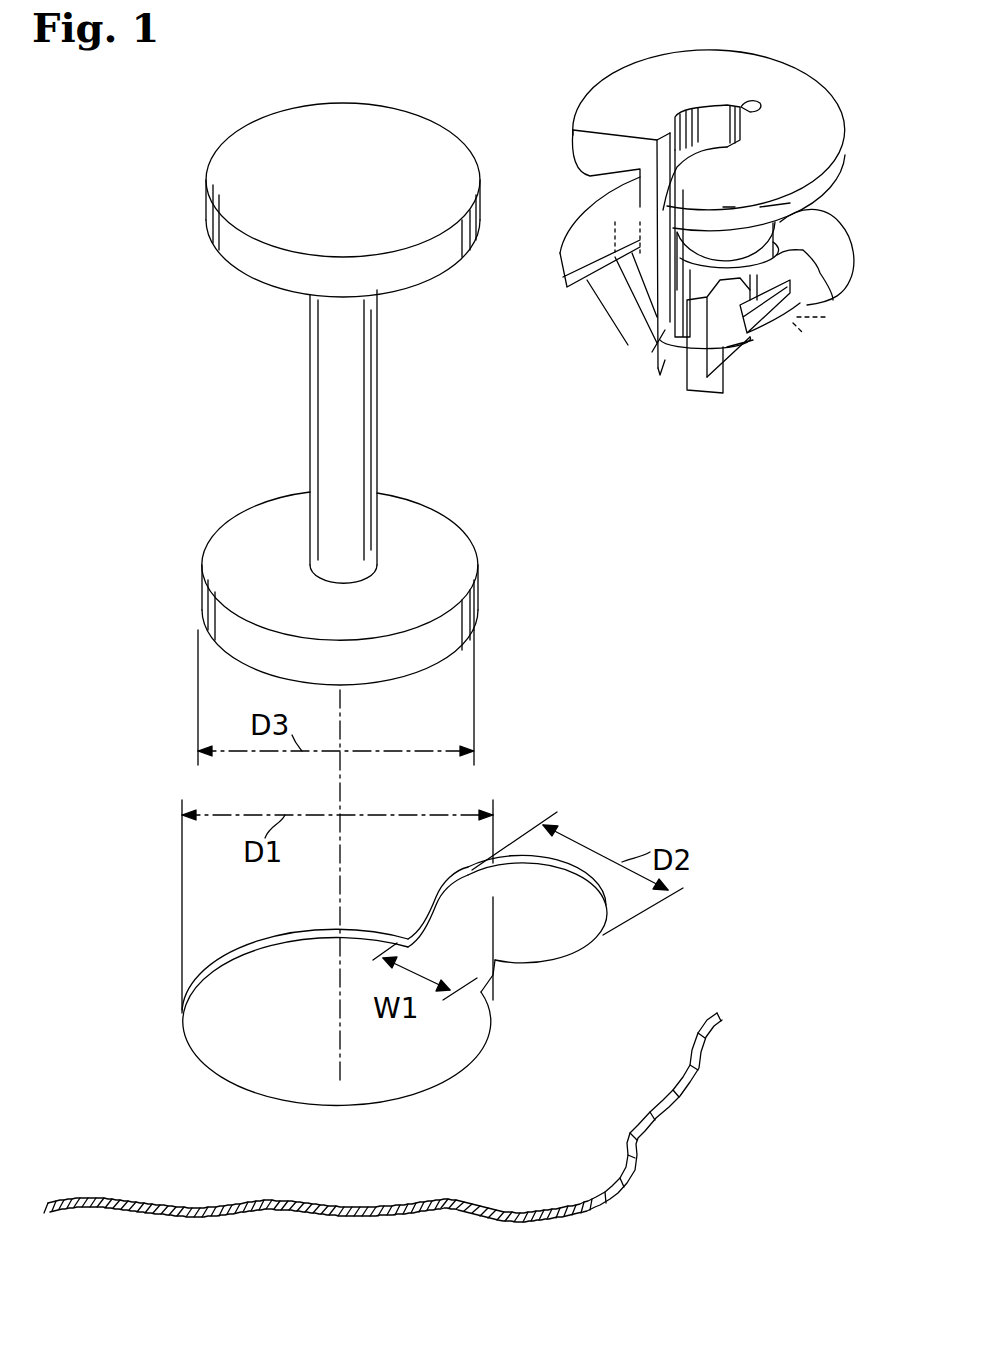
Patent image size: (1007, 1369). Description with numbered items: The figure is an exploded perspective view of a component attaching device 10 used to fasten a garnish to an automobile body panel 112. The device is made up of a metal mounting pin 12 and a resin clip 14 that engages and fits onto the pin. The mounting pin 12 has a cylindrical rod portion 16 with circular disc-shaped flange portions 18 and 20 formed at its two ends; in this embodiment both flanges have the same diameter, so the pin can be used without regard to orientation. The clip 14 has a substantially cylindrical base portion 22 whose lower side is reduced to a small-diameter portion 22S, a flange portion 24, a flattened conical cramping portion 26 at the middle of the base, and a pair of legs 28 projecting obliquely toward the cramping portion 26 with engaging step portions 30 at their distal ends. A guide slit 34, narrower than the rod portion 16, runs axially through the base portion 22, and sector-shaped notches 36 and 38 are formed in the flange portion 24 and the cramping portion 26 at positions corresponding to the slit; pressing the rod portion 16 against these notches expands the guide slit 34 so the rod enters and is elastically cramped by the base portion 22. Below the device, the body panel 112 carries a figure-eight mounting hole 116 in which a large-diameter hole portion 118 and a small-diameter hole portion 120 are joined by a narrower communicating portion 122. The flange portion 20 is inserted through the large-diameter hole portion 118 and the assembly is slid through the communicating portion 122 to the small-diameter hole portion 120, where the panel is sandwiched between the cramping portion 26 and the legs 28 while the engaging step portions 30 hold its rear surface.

The component attaching device 10 is at (787, 505).
The mounting pin 12 is at (483, 560).
The clip 14 is at (737, 395).
The rod portion 16 is at (308, 396).
The flange portion 18 is at (205, 178).
The flange portion 20 is at (203, 553).
The base portion 22 is at (637, 180).
The small-diameter portion 22S is at (655, 362).
The flange portion 24 is at (580, 107).
The cramping portion 26 is at (570, 250).
The legs 28 is at (627, 290).
The engaging step portions 30 is at (627, 230).
The guide slit 34 is at (667, 137).
The notch 36 is at (600, 157).
The notch 38 is at (560, 297).
The body panel 112 is at (627, 1192).
The mounting hole 116 is at (643, 990).
The large-diameter hole portion 118 is at (443, 1077).
The small-diameter hole portion 120 is at (578, 945).
The communicating portion 122 is at (497, 967).